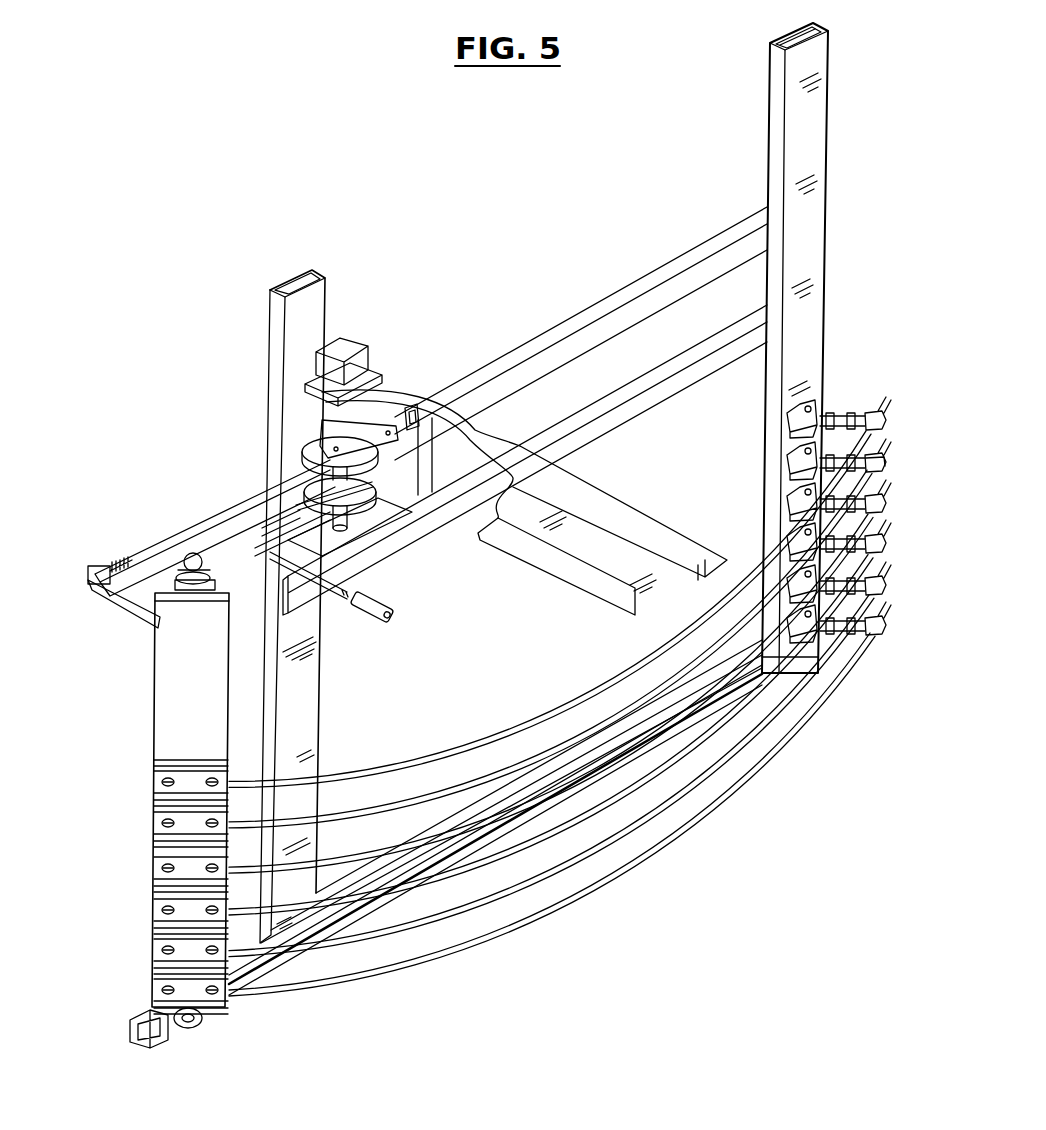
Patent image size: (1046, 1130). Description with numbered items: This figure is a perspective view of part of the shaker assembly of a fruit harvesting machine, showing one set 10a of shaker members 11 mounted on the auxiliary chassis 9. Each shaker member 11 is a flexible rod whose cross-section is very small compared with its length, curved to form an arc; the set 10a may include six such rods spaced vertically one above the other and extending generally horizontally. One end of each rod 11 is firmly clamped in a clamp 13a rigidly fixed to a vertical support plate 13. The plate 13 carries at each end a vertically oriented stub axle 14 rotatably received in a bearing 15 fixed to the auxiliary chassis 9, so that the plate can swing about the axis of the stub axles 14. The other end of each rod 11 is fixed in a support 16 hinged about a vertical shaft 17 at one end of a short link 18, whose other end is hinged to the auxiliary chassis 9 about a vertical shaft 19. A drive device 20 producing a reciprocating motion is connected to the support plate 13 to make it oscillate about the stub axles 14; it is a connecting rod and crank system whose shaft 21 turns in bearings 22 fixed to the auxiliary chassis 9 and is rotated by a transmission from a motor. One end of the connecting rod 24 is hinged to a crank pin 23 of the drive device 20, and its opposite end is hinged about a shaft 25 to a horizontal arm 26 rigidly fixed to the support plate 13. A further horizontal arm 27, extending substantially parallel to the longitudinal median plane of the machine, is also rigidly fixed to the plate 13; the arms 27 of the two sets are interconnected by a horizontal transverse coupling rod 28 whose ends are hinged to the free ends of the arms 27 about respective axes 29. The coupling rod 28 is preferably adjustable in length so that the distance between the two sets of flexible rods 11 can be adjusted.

The auxiliary chassis 9 is at (834, 117).
The set of shaker members 10a is at (700, 884).
The shaker member 11 is at (357, 850).
The vertical support plate 13 is at (175, 688).
The clamp 13a is at (176, 873).
The stub axle 14 is at (190, 553).
The bearing 15 is at (225, 582).
The support 16 is at (884, 463).
The vertical shaft 17 is at (880, 405).
The short link 18 is at (843, 412).
The vertical shaft 19 is at (790, 503).
The drive device 20 is at (300, 458).
The shaft 21 is at (305, 396).
The bearing 22 is at (385, 386).
The crank pin 23 is at (362, 483).
The connecting rod 24 is at (150, 553).
The shaft 25 is at (90, 566).
The horizontal arm 26 is at (133, 598).
The horizontal arm 27 is at (270, 545).
The coupling rod 28 is at (336, 602).
The axis 29 is at (268, 540).